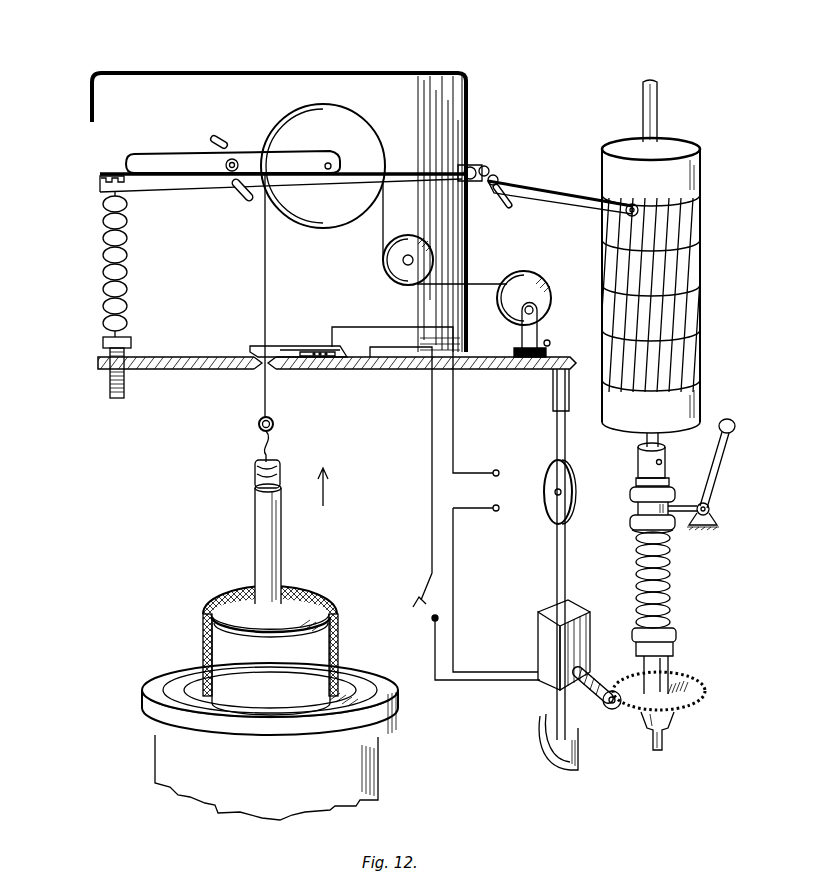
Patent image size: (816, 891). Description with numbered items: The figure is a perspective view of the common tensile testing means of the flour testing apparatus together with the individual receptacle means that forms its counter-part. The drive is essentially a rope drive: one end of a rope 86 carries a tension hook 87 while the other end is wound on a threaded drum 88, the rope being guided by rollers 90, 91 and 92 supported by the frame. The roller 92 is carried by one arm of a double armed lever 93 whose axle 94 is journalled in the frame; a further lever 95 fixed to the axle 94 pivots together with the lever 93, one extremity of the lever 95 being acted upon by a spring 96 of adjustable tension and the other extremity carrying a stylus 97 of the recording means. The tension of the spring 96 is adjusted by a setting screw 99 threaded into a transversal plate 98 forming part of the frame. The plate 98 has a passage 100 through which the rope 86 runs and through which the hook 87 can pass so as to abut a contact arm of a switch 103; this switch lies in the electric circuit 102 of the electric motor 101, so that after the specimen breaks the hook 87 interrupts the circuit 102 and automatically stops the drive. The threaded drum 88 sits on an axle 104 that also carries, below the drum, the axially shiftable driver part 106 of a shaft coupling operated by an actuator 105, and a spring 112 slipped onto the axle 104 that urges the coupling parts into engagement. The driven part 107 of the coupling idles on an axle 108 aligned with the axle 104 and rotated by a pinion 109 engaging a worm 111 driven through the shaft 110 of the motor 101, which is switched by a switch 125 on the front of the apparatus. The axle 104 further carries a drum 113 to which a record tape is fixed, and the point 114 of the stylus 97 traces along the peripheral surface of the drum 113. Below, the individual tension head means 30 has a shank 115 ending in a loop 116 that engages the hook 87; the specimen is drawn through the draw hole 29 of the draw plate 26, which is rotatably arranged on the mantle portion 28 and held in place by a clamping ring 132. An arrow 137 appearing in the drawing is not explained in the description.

The draw plate 26 is at (188, 704).
The mantle portion 28 is at (178, 767).
The draw hole 29 is at (192, 689).
The tension head means 30 is at (340, 616).
The rope 86 is at (553, 430).
The tension hook 87 is at (276, 438).
The threaded drum 88 is at (638, 590).
The roller 90 is at (522, 288).
The roller 91 is at (395, 261).
The roller 92 is at (330, 120).
The double armed lever 93 is at (252, 151).
The axle 94 is at (214, 140).
The lever 95 is at (190, 185).
The spring 96 is at (128, 246).
The stylus 97 is at (521, 189).
The transversal plate 98 is at (198, 371).
The setting screw 99 is at (132, 350).
The passage 100 is at (258, 372).
The electric motor 101 is at (545, 638).
The electric circuit 102 is at (432, 412).
The switch 103 is at (303, 345).
The axle 104 is at (652, 104).
The actuator 105 is at (716, 465).
The driver part 106 is at (630, 506).
The driven part 107 is at (640, 528).
The axle 108 is at (652, 742).
The pinion 109 is at (676, 700).
The shaft 110 is at (592, 662).
The worm 111 is at (608, 710).
The spring 112 is at (638, 470).
The drum 113 is at (683, 168).
The point 114 is at (626, 204).
The shank 115 is at (262, 538).
The loop 116 is at (255, 474).
The switch 125 is at (432, 620).
The clamping ring 132 is at (356, 733).
The direction arrow 137 is at (336, 498).